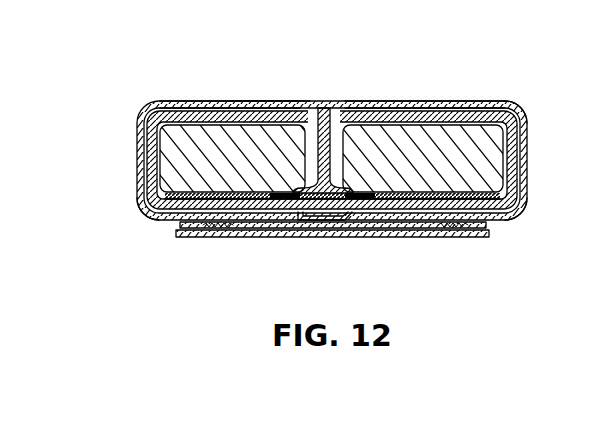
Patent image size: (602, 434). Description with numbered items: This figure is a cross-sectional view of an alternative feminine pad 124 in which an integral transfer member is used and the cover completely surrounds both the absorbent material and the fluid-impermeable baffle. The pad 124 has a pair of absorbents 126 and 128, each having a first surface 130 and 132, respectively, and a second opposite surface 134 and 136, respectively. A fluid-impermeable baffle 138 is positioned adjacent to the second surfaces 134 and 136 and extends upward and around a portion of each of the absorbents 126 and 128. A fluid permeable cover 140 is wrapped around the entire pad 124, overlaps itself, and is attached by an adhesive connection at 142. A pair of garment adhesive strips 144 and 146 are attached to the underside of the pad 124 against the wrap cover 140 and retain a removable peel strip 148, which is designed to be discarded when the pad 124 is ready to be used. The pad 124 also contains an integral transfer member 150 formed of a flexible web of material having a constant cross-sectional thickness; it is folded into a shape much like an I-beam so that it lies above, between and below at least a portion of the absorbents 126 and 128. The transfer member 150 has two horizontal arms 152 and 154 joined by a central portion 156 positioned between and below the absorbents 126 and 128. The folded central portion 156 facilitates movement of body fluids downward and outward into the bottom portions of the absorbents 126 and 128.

The feminine pad 124 is at (190, 56).
The absorbent 126 is at (172, 157).
The absorbent 128 is at (478, 161).
The first surface 130 is at (152, 102).
The first surface 132 is at (503, 98).
The second opposite surface 134 is at (185, 206).
The second opposite surface 136 is at (494, 218).
The fluid-impermeable baffle 138 is at (139, 206).
The fluid permeable cover 140 is at (323, 101).
The adhesive connection 142 is at (337, 219).
The garment adhesive strip 144 is at (205, 229).
The garment adhesive strip 146 is at (444, 231).
The removable peel strip 148 is at (377, 240).
The integral transfer member 150 is at (264, 96).
The horizontal arm 152 is at (196, 110).
The horizontal arm 154 is at (398, 104).
The central portion 156 is at (292, 202).